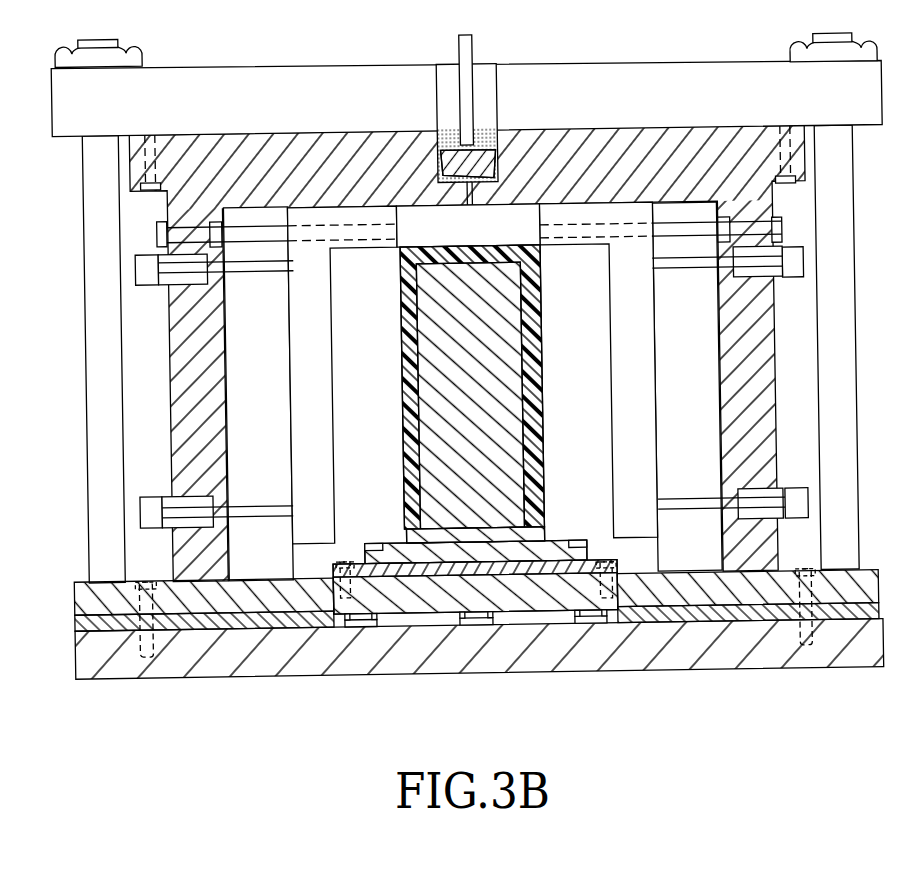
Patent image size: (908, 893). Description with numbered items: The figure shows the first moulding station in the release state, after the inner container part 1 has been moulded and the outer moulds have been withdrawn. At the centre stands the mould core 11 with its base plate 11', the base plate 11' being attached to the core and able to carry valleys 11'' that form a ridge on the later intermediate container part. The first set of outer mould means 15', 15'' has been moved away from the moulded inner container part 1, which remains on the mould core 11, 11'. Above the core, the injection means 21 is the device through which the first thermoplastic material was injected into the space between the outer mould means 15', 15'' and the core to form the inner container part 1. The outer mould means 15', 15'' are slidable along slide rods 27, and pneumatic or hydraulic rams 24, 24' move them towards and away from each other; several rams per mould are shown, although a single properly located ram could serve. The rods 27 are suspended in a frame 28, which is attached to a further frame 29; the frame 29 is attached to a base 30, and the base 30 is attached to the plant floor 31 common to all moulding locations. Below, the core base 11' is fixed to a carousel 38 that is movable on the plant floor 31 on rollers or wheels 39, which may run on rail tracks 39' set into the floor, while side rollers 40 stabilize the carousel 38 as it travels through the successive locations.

The inner container part 1 is at (530, 406).
The mould core 11 is at (497, 386).
The base plate 11' is at (536, 508).
The valleys 11'' is at (475, 505).
The outer mould means 15' is at (344, 375).
The outer mould means 15'' is at (632, 370).
The injection means 21 is at (510, 80).
The pneumatic or hydraulic ram 24 is at (216, 374).
The pneumatic or hydraulic ram 24' is at (737, 368).
The slide rods 27 is at (514, 229).
The frame 28 is at (692, 145).
The further frame 29 is at (271, 94).
The base 30 is at (91, 601).
The plant floor 31 is at (190, 659).
The carousel 38 is at (530, 600).
The rollers or wheels 39 is at (466, 667).
The rail tracks 39' is at (500, 663).
The side rollers 40 is at (330, 575).